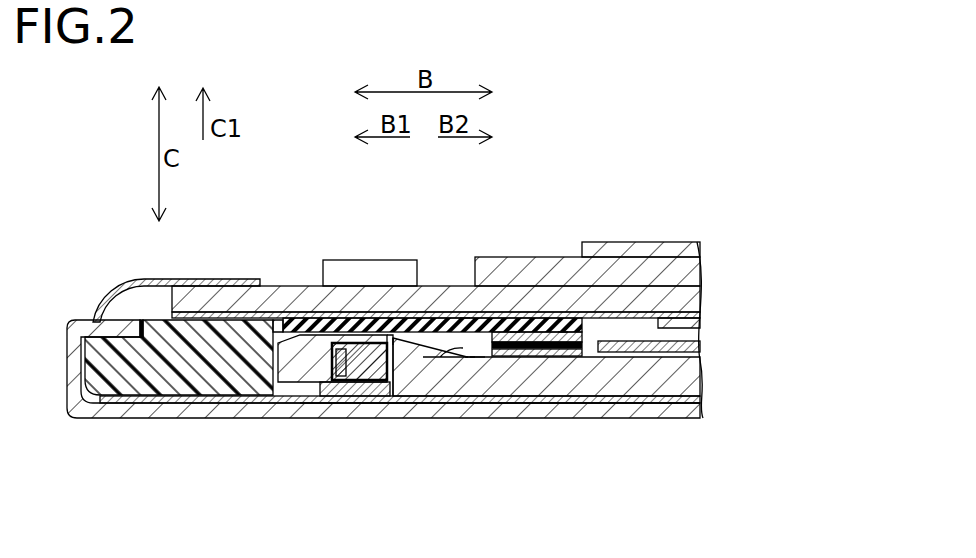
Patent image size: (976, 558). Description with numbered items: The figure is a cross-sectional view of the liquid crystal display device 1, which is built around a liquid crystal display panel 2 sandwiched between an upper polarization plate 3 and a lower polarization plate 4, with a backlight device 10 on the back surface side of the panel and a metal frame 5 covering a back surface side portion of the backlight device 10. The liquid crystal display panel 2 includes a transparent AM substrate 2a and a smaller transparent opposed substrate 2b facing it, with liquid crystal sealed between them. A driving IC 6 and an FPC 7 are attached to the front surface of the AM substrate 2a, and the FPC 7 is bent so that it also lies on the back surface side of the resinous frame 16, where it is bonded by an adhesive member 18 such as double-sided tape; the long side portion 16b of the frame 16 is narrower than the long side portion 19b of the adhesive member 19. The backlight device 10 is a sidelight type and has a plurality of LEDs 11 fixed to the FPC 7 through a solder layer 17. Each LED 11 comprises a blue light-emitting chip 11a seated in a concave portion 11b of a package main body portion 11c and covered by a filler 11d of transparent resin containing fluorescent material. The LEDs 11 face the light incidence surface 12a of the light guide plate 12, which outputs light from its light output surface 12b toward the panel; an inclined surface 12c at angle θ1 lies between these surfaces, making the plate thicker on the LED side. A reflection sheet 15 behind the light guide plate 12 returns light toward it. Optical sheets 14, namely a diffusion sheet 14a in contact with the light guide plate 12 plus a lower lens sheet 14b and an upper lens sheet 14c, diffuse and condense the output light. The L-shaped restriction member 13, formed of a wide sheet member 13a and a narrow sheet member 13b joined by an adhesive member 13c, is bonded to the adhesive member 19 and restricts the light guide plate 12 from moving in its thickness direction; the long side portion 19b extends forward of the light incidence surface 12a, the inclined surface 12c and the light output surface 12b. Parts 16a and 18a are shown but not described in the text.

The liquid crystal display device 1 is at (750, 147).
The liquid crystal display panel 2 is at (750, 248).
The AM substrate 2a is at (696, 291).
The opposed substrate 2b is at (696, 264).
The upper polarization plate 3 is at (695, 245).
The lower polarization plate 4 is at (700, 318).
The metal frame 5 is at (626, 408).
The driving IC 6 is at (380, 268).
The FPC 7 is at (118, 286).
The backlight device 10 is at (811, 309).
The LED 11 is at (372, 478).
The blue light-emitting chip 11a is at (337, 362).
The concave portion 11b is at (403, 312).
The package main body portion 11c is at (303, 363).
The filler 11d is at (362, 368).
The light guide plate 12 is at (688, 375).
The light incidence surface 12a is at (380, 390).
The light output surface 12b is at (475, 352).
The inclined surface 12c is at (470, 358).
The restriction member 13 is at (587, 213).
The wide sheet member 13a is at (469, 330).
The narrow sheet member 13b is at (563, 334).
The adhesive member 13c is at (515, 334).
The optical sheets 14 is at (772, 315).
The diffusion sheet 14a is at (703, 353).
The lower lens sheet 14b is at (703, 349).
The upper lens sheet 14c is at (700, 335).
The reflection sheet 15 is at (700, 400).
The frame 16 is at (376, 399).
The housing partition 16a is at (280, 322).
The long side portion 16b is at (96, 372).
The solder layer 17 is at (357, 392).
The adhesive member 18 is at (179, 399).
The battery body 18a is at (185, 392).
The adhesive member 19 is at (425, 275).
The long side portion 19b is at (303, 318).